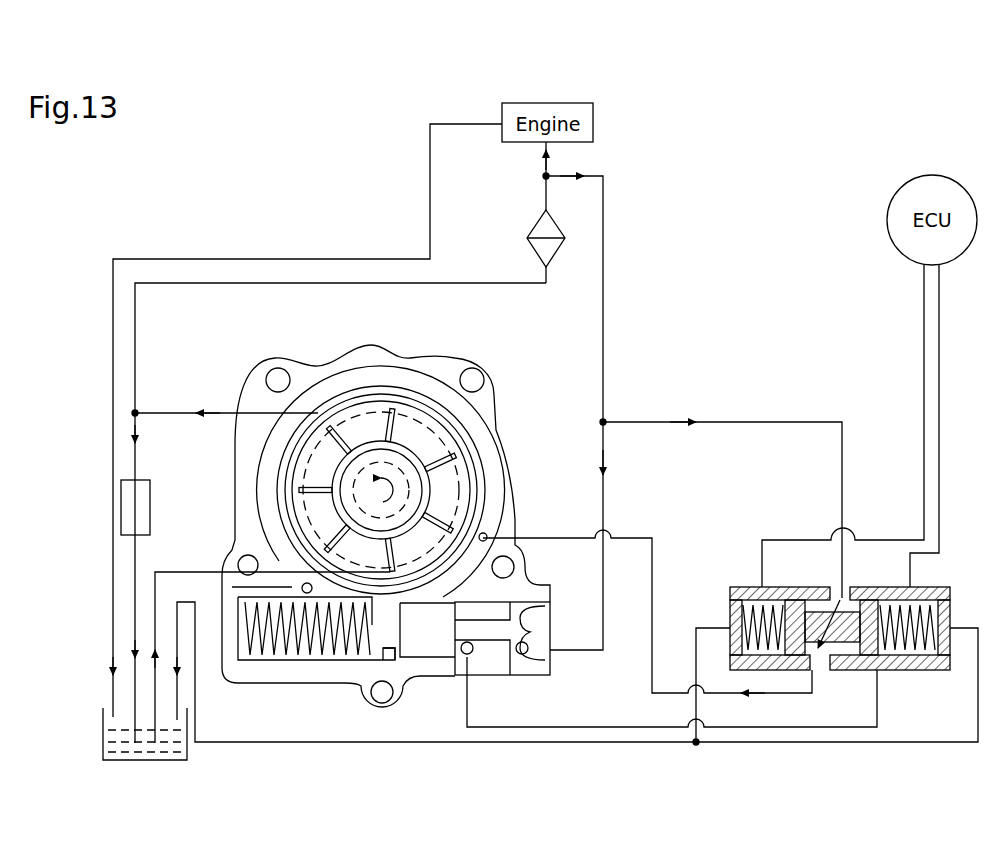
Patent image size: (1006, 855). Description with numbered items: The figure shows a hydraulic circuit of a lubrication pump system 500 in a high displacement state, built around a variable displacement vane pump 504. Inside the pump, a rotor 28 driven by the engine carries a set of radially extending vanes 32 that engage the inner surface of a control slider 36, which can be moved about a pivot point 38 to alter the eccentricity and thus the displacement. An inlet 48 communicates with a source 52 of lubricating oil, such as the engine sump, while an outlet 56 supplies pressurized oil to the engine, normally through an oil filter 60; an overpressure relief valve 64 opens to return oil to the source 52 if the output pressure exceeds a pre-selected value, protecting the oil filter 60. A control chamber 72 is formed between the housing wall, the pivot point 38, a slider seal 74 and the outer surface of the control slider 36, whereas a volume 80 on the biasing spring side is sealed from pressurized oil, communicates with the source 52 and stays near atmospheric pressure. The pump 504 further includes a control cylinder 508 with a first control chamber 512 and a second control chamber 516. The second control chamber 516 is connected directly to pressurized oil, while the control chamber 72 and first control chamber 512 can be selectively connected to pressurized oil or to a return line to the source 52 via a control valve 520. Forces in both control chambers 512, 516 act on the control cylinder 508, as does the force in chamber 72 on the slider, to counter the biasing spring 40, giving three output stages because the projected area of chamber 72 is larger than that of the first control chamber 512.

The lubrication pump system 500 is at (204, 206).
The oil filter 60 is at (530, 238).
The outlet 56 is at (352, 400).
The pivot point 38 is at (365, 395).
The vanes 32 is at (437, 430).
The variable displacement vane pump 504 is at (508, 415).
The control chamber 72 is at (486, 450).
The rotor 28 is at (445, 486).
The control slider 36 is at (483, 497).
The volume 80 is at (262, 522).
The overpressure relief valve 64 is at (152, 492).
The inlet 48 is at (425, 562).
The first control chamber 512 is at (548, 592).
The second control chamber 516 is at (522, 655).
The biasing spring 40 is at (318, 640).
The slider seal 74 is at (392, 658).
The control cylinder 508 is at (447, 648).
The source 52 is at (188, 757).
The control valve 520 is at (740, 590).